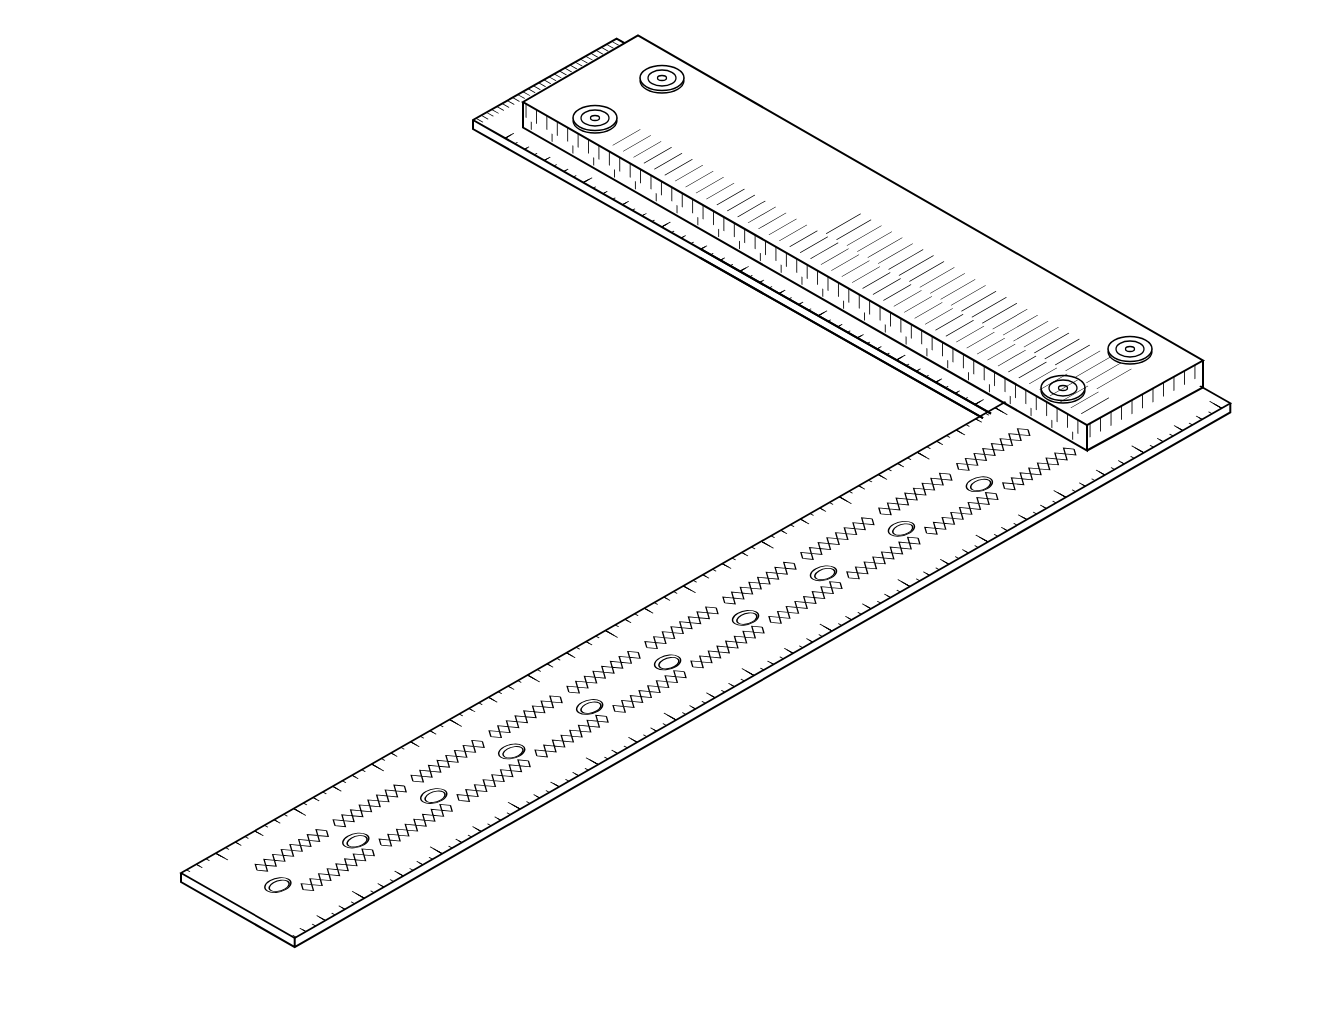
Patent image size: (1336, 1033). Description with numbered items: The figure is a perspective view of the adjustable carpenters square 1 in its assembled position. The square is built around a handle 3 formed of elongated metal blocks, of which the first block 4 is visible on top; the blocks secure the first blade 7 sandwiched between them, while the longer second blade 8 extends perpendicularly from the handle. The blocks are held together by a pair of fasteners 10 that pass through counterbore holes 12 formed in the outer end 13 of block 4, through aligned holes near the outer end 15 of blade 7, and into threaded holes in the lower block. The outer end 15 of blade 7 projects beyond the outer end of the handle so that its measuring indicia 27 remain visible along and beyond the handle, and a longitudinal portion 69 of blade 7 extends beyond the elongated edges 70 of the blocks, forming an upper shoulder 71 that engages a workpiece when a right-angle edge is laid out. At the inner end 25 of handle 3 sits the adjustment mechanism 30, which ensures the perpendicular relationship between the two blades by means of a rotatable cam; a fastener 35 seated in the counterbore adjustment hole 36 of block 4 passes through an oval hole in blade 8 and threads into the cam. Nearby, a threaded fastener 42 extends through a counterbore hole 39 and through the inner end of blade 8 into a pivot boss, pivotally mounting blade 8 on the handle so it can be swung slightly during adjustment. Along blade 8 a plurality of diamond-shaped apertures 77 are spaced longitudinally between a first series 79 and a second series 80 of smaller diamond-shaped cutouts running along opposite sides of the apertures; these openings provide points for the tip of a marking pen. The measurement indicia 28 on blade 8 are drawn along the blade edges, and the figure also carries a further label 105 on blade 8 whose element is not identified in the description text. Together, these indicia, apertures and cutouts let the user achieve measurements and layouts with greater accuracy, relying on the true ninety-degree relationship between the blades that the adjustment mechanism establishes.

The adjustable carpenters square 1 is at (1058, 189).
The handle 3 is at (885, 174).
The first block 4 is at (903, 235).
The first blade 7 is at (752, 287).
The second blade 8 is at (670, 590).
The fasteners 10 is at (570, 118).
The counterbore holes 12 is at (593, 105).
The outer end of handle block 13 is at (557, 107).
The outer end of blade 15 is at (491, 109).
The inner end of handle 25 is at (1190, 355).
The measuring indicia 27 is at (713, 247).
The measurement indicia 28 is at (702, 640).
The adjustment mechanism 30 is at (1131, 317).
The fastener 35 is at (1068, 377).
The counterbore hole 36 is at (1068, 377).
The counterbore hole 39 is at (1128, 338).
The threaded fastener 42 is at (1143, 342).
The longitudinal portion 69 is at (732, 255).
The elongated edges 70 is at (844, 334).
The upper shoulder 71 is at (860, 312).
The diamond-shaped apertures 77 is at (629, 685).
The first series of cutouts 79 is at (642, 649).
The second series of cutouts 80 is at (688, 669).
The measuring scales of second ruler 105 is at (702, 640).